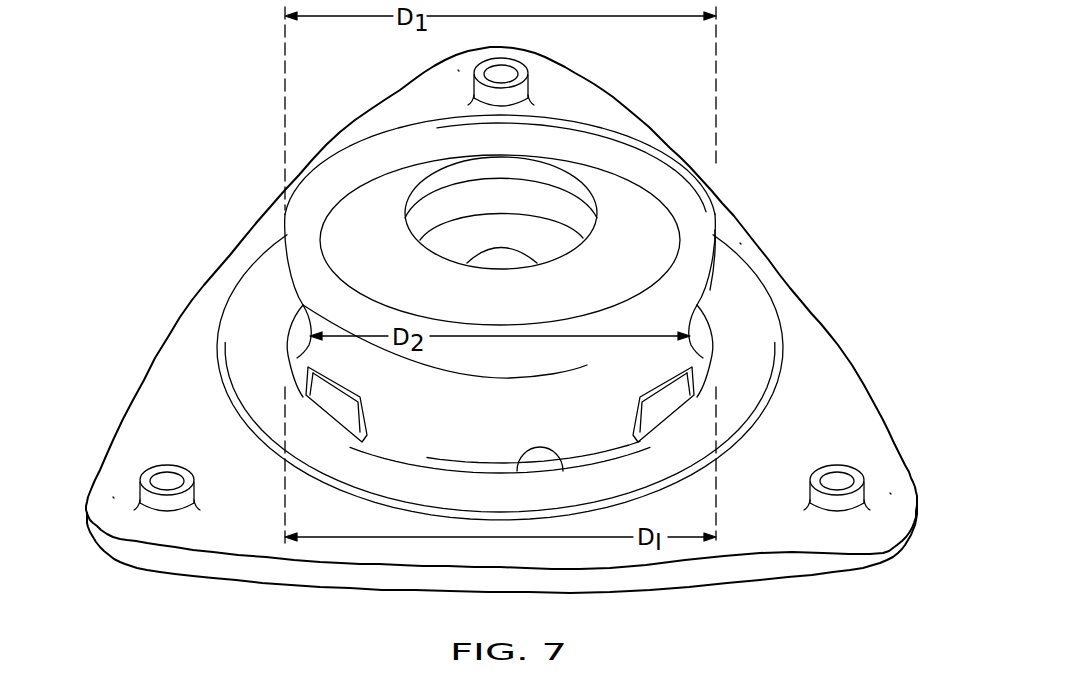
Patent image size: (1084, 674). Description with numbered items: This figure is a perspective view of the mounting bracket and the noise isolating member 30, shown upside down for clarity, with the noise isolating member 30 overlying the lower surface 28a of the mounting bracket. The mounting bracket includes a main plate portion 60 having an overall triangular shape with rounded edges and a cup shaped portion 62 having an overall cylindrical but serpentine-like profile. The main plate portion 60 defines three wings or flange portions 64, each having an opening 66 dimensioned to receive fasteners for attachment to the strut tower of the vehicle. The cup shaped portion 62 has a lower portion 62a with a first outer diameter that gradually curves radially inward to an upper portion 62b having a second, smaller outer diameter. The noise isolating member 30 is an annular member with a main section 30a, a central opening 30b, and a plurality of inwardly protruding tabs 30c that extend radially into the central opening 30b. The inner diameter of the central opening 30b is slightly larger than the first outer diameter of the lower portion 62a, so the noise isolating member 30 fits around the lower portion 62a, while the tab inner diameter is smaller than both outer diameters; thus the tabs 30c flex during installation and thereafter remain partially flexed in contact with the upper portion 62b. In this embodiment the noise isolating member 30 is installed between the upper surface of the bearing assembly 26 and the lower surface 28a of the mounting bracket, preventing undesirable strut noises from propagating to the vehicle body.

The bearing assembly 26 is at (620, 96).
The lower surface of the mounting bracket 28a is at (740, 243).
The noise isolating member 30 is at (748, 450).
The main section 30a is at (373, 470).
The central opening 30b is at (563, 463).
The inwardly protruding tabs 30c is at (338, 404).
The main plate portion 60 is at (823, 380).
The cup shaped portion 62 is at (687, 200).
The lower portion 62a is at (715, 265).
The upper portion 62b is at (697, 336).
The flange portions 64 is at (458, 70).
The opening 66 is at (502, 72).